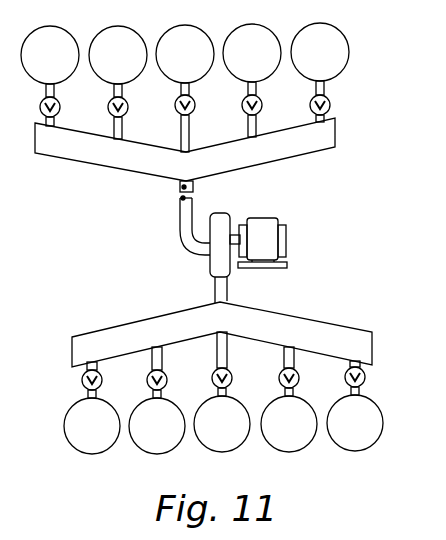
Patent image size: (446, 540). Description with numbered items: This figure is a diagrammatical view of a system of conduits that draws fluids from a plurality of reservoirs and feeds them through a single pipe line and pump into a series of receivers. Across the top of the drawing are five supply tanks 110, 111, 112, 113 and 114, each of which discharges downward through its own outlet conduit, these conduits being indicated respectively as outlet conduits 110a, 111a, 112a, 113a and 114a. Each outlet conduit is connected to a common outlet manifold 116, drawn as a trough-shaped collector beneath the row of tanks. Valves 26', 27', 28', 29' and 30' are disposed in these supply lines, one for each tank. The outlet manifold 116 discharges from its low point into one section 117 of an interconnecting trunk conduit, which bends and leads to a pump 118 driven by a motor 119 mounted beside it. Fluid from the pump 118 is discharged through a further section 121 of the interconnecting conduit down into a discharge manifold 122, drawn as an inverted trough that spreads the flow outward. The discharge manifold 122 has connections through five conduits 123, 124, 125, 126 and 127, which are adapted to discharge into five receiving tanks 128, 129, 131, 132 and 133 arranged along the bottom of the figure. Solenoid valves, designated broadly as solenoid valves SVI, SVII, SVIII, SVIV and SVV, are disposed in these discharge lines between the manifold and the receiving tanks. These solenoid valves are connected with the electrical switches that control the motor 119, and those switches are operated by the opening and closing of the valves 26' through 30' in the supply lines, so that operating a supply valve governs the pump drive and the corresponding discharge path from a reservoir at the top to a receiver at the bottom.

The supply tank 110 is at (58, 30).
The supply tank 111 is at (126, 30).
The supply tank 112 is at (192, 29).
The supply tank 113 is at (258, 27).
The supply tank 114 is at (327, 27).
The outlet conduit 110a is at (57, 94).
The outlet conduit 111a is at (125, 94).
The outlet conduit 112a is at (192, 93).
The outlet conduit 113a is at (259, 93).
The outlet conduit 114a is at (327, 93).
The valve 26' is at (70, 119).
The valve 27' is at (138, 124).
The valve 28' is at (204, 130).
The valve 29' is at (271, 122).
The valve 30' is at (344, 117).
The outlet manifold 116 is at (297, 157).
The section of interconnecting trunk conduit 117 is at (180, 213).
The pump 118 is at (210, 266).
The motor 119 is at (265, 221).
The section of interconnecting conduit 121 is at (227, 288).
The discharge manifold 122 is at (327, 320).
The conduit 123 is at (99, 372).
The conduit 124 is at (163, 362).
The conduit 125 is at (228, 358).
The conduit 126 is at (295, 361).
The conduit 127 is at (364, 366).
The solenoid valve SVI is at (101, 384).
The solenoid valve SVII is at (166, 384).
The solenoid valve SVIII is at (231, 382).
The solenoid valve SVIV is at (298, 382).
The solenoid valve SVV is at (364, 381).
The receiving tank 128 is at (100, 452).
The receiving tank 129 is at (165, 452).
The receiving tank 131 is at (230, 450).
The receiving tank 132 is at (297, 448).
The receiving tank 133 is at (363, 447).